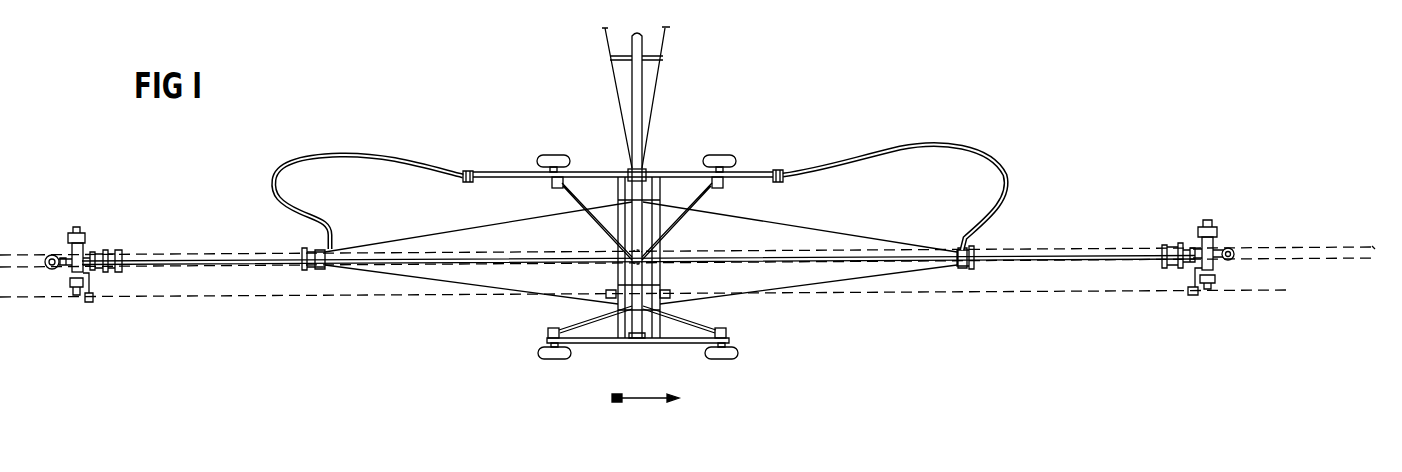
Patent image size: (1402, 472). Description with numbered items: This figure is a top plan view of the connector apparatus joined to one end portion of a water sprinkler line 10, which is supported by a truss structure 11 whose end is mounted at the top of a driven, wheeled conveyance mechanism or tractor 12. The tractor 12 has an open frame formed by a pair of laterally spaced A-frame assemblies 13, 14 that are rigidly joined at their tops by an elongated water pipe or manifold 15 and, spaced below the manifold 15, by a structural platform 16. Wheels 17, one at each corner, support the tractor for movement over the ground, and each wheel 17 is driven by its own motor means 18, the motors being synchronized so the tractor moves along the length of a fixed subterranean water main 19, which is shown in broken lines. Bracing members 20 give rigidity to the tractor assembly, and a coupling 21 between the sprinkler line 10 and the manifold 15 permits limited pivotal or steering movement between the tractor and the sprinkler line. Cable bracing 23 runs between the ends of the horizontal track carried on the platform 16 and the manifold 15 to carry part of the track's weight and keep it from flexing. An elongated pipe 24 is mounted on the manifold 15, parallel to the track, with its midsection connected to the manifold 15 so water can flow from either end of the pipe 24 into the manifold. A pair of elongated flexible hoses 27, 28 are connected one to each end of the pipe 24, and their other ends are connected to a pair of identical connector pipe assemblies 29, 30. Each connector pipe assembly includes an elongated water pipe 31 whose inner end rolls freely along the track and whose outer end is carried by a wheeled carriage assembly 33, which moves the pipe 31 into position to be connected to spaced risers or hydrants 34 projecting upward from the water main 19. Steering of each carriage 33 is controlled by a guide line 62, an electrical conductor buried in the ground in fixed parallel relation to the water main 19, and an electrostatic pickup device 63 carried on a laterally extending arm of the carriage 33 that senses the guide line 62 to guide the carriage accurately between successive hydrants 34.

The water sprinkler line 10 is at (645, 107).
The truss structure 11 is at (655, 89).
The tractor 12 is at (687, 157).
The A-frame assembly 13 is at (606, 168).
The A-frame assembly 14 is at (603, 345).
The manifold 15 is at (641, 336).
The structural platform 16 is at (660, 270).
The wheels 17 is at (728, 157).
The motor means 18 is at (550, 185).
The water main 19 is at (1278, 248).
The bracing members 20 is at (582, 190).
The coupling 21 is at (642, 176).
The bracing 23 is at (375, 242).
The pipe 24 is at (757, 170).
The flexible hose 27 is at (400, 165).
The flexible hose 28 is at (983, 157).
The connector pipe assembly 29 is at (121, 235).
The connector pipe assembly 30 is at (1160, 237).
The water pipe 31 is at (269, 263).
The wheeled carriage assembly 33 is at (85, 245).
The hydrant 34 is at (52, 255).
The guide line 62 is at (1290, 292).
The electrostatic pickup device 63 is at (92, 305).